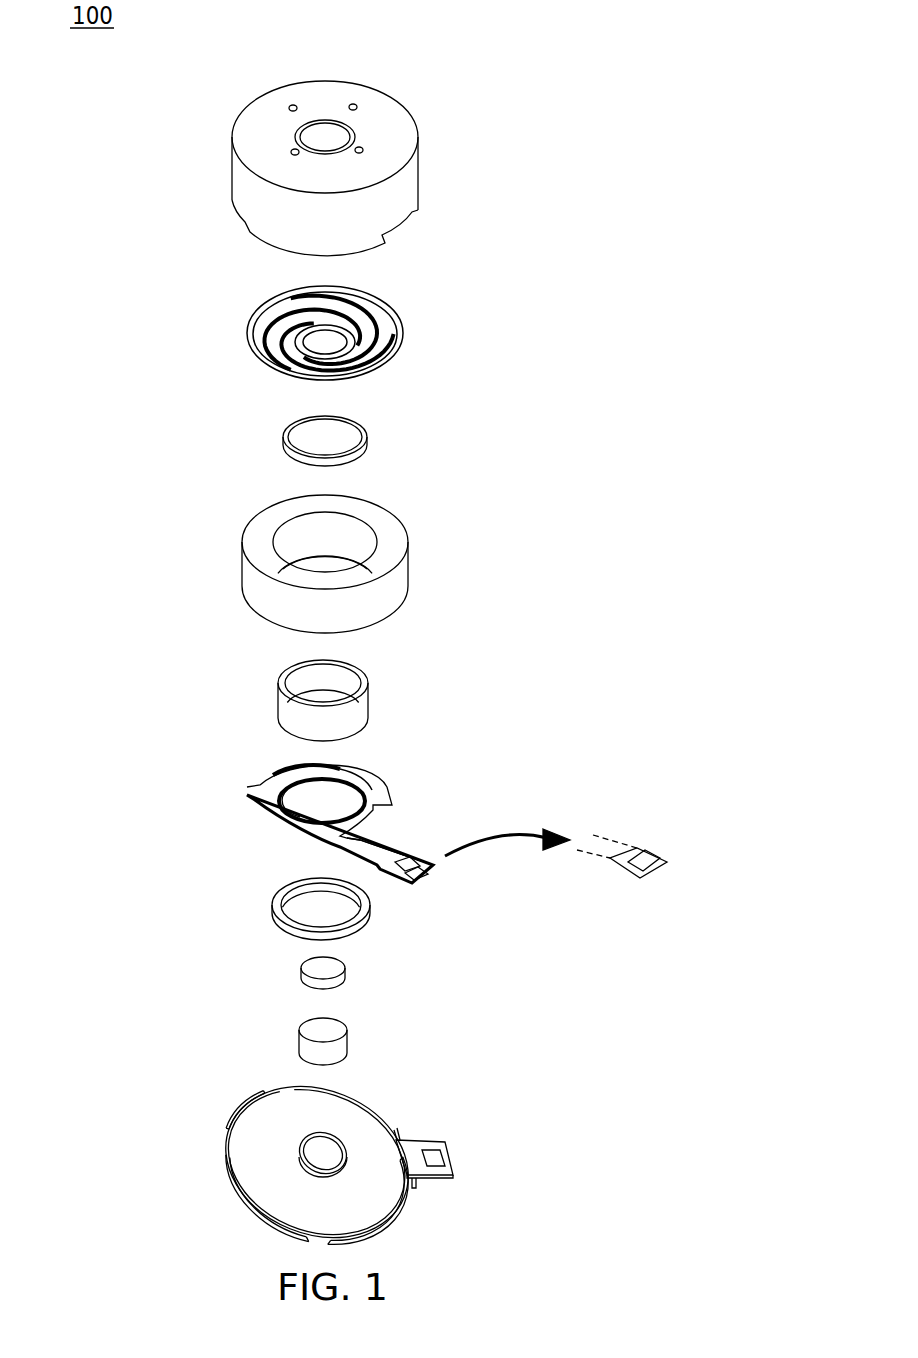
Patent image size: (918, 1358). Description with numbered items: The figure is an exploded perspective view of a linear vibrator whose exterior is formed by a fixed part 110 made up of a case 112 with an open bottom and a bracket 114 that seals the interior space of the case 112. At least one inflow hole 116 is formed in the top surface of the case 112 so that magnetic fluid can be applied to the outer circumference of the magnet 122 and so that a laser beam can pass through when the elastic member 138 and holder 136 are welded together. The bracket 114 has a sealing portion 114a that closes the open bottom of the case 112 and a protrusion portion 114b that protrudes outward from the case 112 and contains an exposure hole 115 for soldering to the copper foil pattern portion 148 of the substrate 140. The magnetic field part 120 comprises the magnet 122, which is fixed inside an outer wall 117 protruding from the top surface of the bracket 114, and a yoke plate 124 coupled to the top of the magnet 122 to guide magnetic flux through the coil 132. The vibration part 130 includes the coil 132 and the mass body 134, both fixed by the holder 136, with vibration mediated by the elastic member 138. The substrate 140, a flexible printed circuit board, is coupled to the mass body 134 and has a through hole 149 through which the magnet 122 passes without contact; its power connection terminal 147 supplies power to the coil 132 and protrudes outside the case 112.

The fixed part 110 is at (66, 1136).
The case 112 is at (235, 174).
The bracket 114 is at (140, 1086).
The sealing portion 114a is at (253, 1137).
The protrusion portion 114b is at (410, 1160).
The exposure hole 115 is at (456, 1159).
The inflow hole 116 is at (354, 105).
The outer wall 117 is at (344, 1147).
The magnetic field part 120 is at (451, 962).
The magnet 122 is at (349, 1043).
The yoke plate 124 is at (347, 976).
The vibration part 130 is at (512, 710).
The coil 132 is at (366, 710).
The mass body 134 is at (409, 576).
The holder 136 is at (367, 437).
The elastic member 138 is at (401, 329).
The substrate 140 is at (389, 794).
The power connection terminal 147 is at (438, 878).
The copper foil pattern portion 148 is at (645, 853).
The through hole 149 is at (290, 817).